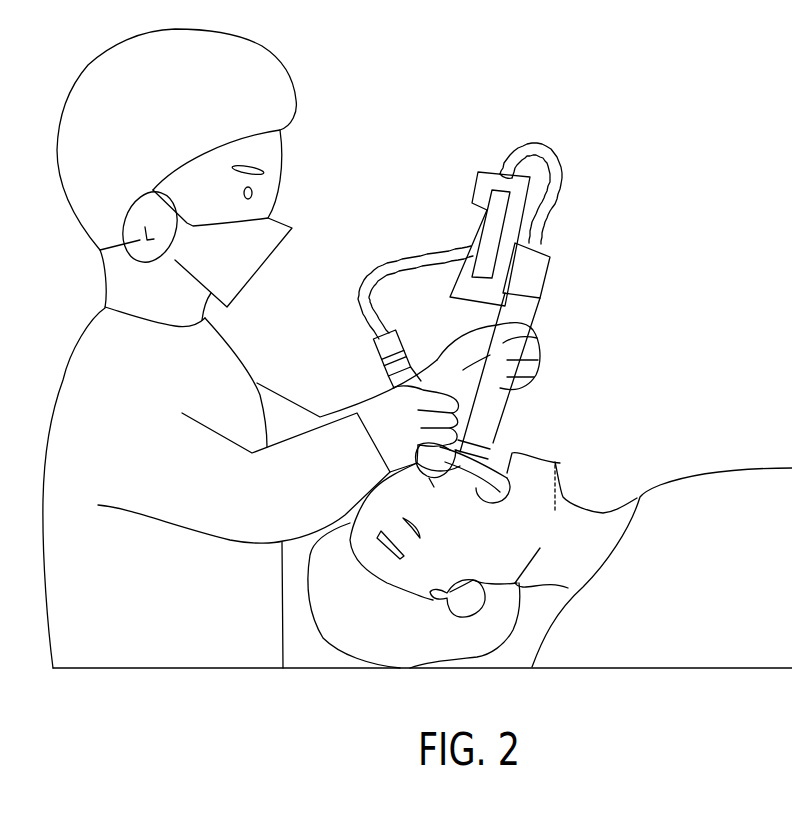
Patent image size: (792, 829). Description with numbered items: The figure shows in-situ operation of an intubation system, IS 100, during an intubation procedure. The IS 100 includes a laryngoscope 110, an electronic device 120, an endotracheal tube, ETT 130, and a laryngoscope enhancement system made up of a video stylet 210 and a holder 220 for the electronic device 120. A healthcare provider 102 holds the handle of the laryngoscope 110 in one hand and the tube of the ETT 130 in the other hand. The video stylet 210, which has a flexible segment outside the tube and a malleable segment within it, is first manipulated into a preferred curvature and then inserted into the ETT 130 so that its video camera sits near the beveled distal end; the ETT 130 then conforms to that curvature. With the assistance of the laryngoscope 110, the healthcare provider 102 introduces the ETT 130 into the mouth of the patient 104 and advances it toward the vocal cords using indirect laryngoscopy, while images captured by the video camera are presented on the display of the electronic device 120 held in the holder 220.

The IS 100 is at (632, 118).
The healthcare provider 102 is at (285, 63).
The patient 104 is at (556, 463).
The laryngoscope 110 is at (537, 319).
The electronic device 120 is at (480, 227).
The ETT 130 is at (372, 364).
The video stylet 210 is at (413, 262).
The holder 220 is at (553, 257).